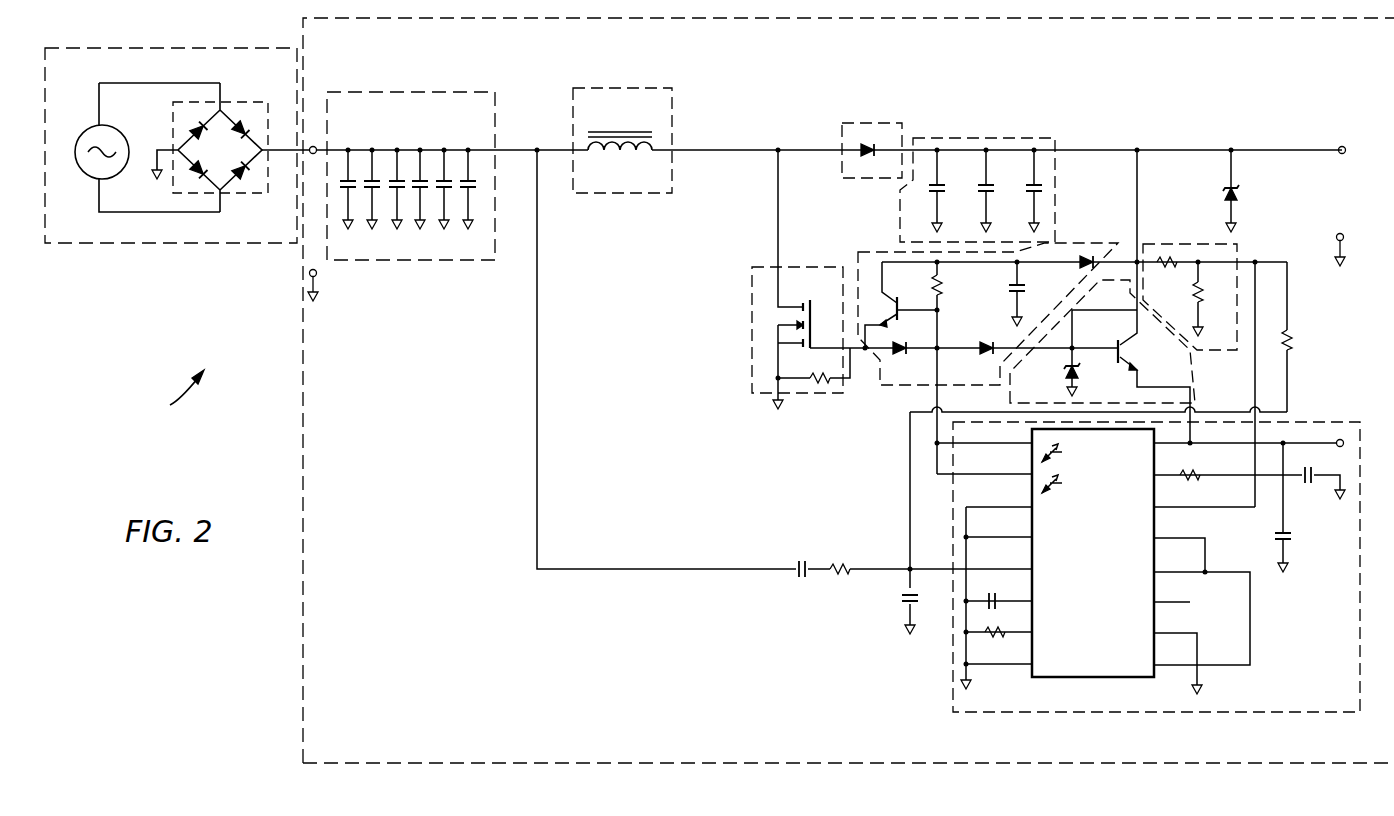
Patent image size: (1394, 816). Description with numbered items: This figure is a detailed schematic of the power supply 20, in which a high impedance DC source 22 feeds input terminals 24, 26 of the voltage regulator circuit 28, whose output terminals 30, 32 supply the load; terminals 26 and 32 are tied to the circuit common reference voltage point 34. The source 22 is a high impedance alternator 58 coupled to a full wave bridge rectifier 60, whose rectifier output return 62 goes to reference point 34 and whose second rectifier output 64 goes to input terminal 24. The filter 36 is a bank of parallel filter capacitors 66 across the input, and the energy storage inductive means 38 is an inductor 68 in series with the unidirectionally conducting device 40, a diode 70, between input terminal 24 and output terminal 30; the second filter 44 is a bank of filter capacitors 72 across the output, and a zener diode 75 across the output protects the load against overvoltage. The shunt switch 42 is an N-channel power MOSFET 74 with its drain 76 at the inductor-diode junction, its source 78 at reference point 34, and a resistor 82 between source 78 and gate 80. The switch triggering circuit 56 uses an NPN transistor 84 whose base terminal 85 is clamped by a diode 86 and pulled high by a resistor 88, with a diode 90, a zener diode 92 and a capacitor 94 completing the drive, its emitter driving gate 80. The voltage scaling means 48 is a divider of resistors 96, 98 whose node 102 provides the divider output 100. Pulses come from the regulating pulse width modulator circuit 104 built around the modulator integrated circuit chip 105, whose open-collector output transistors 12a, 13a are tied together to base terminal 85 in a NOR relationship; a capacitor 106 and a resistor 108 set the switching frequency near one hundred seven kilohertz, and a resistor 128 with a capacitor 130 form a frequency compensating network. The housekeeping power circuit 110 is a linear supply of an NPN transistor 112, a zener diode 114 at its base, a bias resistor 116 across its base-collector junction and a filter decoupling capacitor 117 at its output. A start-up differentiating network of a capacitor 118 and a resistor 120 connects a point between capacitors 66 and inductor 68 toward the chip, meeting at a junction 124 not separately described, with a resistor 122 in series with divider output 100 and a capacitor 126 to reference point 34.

The power supply 20 is at (171, 396).
The high impedance DC source 22 is at (175, 243).
The input terminal 24 is at (316, 146).
The input terminal 26 is at (316, 276).
The voltage regulator circuit 28 is at (303, 402).
The output terminal 30 is at (1340, 146).
The output terminal 32 is at (1343, 236).
The circuit common reference voltage point 34 is at (154, 178).
The filter 36 is at (447, 92).
The energy storage inductive means 38 is at (672, 100).
The unidirectionally conducting device 40 is at (870, 123).
The shunt switch 42 is at (752, 320).
The second filter 44 is at (1015, 138).
The voltage scaling means 48 is at (1152, 244).
The switch triggering circuit 56 is at (872, 252).
The high impedance alternator 58 is at (86, 132).
The full wave bridge rectifier 60 is at (248, 193).
The rectifier output return 62 is at (178, 128).
The second rectifier output 64 is at (264, 140).
The filter capacitors 66 is at (470, 188).
The inductor 68 is at (640, 162).
The diode 70 is at (856, 147).
The filter capacitors 72 is at (1042, 192).
The N-channel power MOSFET 74 is at (772, 313).
The zener diode 75 is at (1240, 190).
The drain 76 is at (778, 285).
The source 78 is at (778, 352).
The gate 80 is at (812, 338).
The resistor 82 is at (830, 382).
The NPN transistor 84 is at (896, 298).
The base terminal 85 is at (940, 310).
The diode 86 is at (902, 358).
The resistor 88 is at (946, 284).
The diode 90 is at (976, 326).
The zener diode 92 is at (1082, 264).
The capacitor 94 is at (1022, 290).
The resistor 96 is at (1172, 258).
The resistor 98 is at (1194, 296).
The divider output 100 is at (1287, 263).
The node 102 is at (1237, 250).
The regulating pulse width modulator circuit 104 is at (1100, 712).
The regulating pulse width modulator integrated circuit chip 105 is at (1100, 677).
The capacitor 106 is at (996, 608).
The resistor 108 is at (1008, 638).
The housekeeping power circuit 110 is at (1008, 402).
The NPN transistor 112 is at (1128, 348).
The zener diode 114 is at (1078, 370).
The bias resistor 116 is at (1108, 310).
The filter decoupling capacitor 117 is at (1290, 533).
The capacitor 118 is at (799, 562).
The resistor 120 is at (845, 564).
The resistor 122 is at (1292, 340).
The node 124 is at (908, 566).
The capacitor 126 is at (902, 598).
The resistor 128 is at (1198, 478).
The capacitor 130 is at (1312, 476).
The output transistor 12a is at (1062, 452).
The output transistor 13a is at (1062, 483).